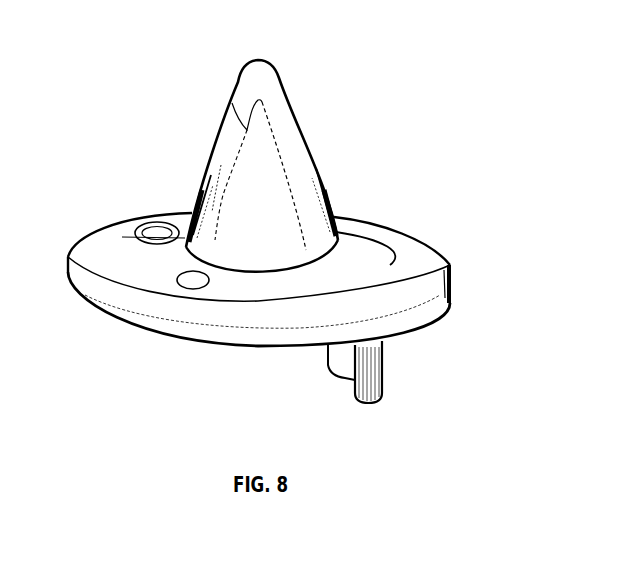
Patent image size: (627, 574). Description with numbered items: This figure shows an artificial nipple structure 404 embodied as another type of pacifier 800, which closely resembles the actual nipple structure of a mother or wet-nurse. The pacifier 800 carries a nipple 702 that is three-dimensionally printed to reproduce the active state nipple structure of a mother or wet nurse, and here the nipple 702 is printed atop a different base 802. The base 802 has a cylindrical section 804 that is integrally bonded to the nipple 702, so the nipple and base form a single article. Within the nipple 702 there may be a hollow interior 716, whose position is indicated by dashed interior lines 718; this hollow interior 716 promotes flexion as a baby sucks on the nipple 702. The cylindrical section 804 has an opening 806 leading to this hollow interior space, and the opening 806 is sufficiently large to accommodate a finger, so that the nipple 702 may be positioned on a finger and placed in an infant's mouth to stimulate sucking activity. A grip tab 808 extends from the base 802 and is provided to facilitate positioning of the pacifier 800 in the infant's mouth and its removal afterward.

The pacifier 800 is at (150, 125).
The artificial nipple structure 404 is at (330, 211).
The nipple 702 is at (273, 60).
The hollow interior 716 is at (237, 103).
The dashed interior lines 718 is at (282, 158).
The base 802 is at (515, 382).
The cylindrical section 804 is at (403, 310).
The opening 806 is at (251, 366).
The grip tab 808 is at (383, 382).